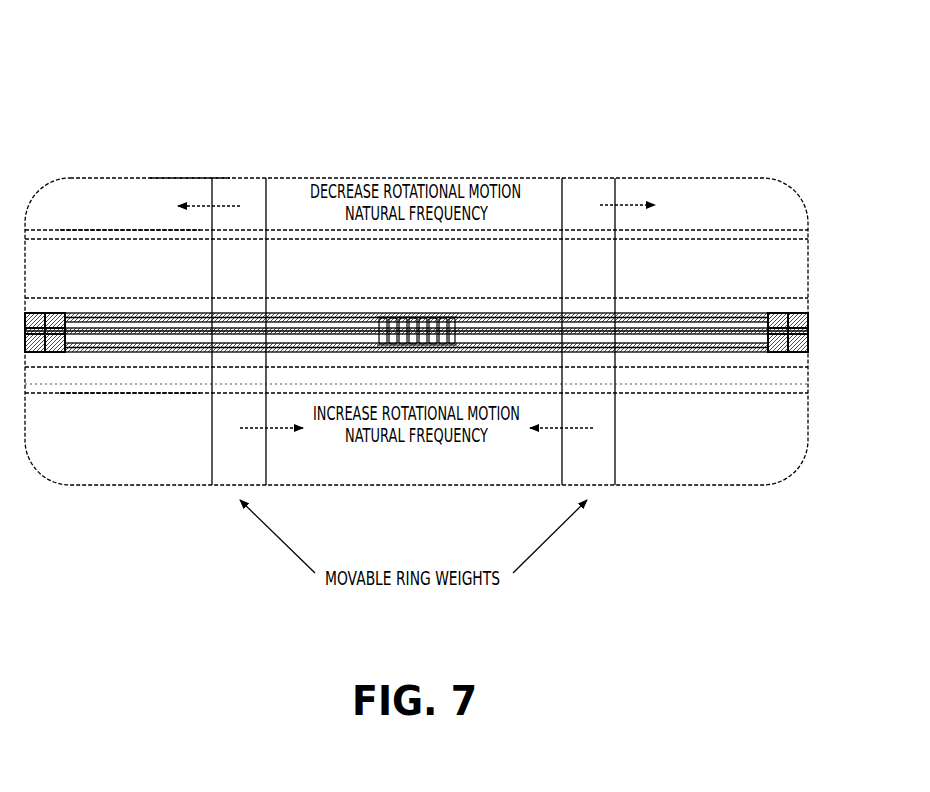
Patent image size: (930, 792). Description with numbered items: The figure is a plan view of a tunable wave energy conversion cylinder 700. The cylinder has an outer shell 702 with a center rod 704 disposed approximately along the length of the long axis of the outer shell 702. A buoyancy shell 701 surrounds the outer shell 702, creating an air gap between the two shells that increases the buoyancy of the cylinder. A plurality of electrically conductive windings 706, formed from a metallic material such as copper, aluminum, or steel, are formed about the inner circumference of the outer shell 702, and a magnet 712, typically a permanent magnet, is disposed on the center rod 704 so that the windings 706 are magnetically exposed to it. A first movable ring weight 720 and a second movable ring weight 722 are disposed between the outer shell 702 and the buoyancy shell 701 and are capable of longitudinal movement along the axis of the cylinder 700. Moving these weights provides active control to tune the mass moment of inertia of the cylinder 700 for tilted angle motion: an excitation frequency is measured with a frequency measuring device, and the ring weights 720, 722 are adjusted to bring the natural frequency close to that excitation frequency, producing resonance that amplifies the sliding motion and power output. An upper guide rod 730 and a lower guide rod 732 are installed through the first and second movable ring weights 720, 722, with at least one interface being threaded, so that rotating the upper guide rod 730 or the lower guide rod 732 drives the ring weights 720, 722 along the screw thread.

The tunable wave energy conversion cylinder 700 is at (420, 249).
The buoyancy shell 701 is at (185, 178).
The outer shell 702 is at (735, 298).
The center rod 704 is at (95, 332).
The electrically conductive windings 706 is at (503, 317).
The magnet 712 is at (428, 318).
The first movable ring weight 720 is at (245, 190).
The second movable ring weight 722 is at (587, 192).
The upper guide rod 730 is at (143, 232).
The lower guide rod 732 is at (92, 390).